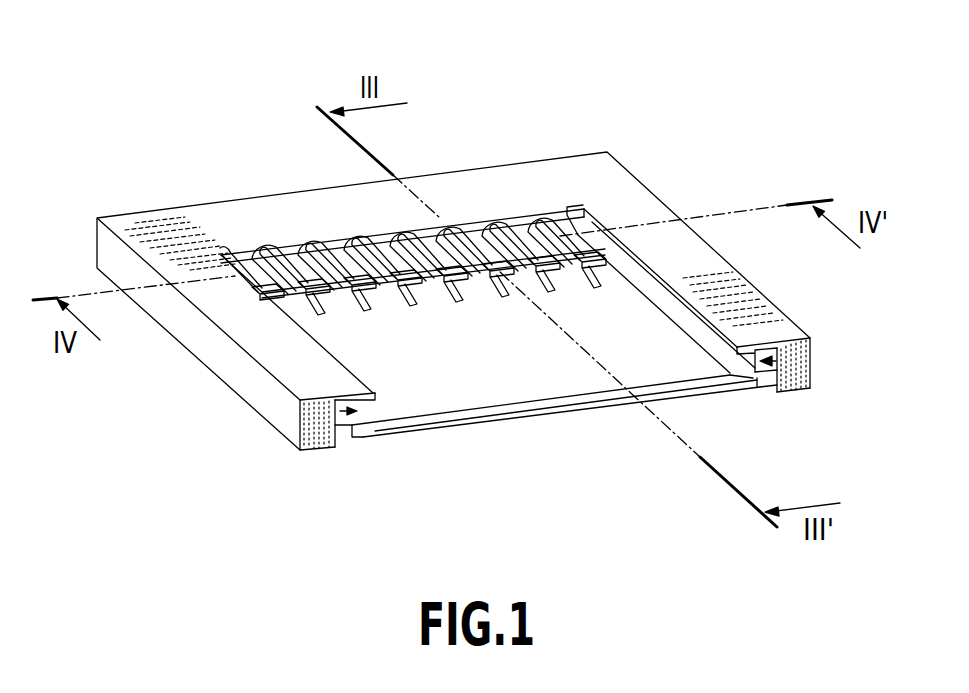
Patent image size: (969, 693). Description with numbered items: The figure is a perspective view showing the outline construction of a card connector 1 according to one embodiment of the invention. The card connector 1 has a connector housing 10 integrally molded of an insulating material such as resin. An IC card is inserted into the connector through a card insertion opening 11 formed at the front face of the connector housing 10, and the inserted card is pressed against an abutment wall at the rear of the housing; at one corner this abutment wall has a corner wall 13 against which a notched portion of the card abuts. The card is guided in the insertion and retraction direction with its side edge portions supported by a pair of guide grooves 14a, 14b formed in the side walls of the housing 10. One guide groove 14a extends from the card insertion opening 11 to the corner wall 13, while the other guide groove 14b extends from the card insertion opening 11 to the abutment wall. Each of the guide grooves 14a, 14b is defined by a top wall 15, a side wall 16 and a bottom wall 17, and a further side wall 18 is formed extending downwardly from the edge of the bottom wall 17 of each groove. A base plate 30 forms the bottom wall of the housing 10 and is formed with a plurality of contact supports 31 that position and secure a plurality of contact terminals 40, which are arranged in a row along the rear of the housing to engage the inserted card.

The card connector 1 is at (605, 110).
The connector housing 10 is at (168, 222).
The card insertion opening 11 is at (518, 387).
The corner wall 13 is at (573, 222).
The guide groove 14a is at (778, 350).
The guide groove 14b is at (327, 423).
The top wall 15 is at (351, 393).
The side wall 16 is at (334, 420).
The bottom wall 17 is at (355, 413).
The side wall 18 is at (363, 437).
The base plate 30 is at (420, 270).
The contact supports 31 is at (337, 237).
The contact terminals 40 is at (530, 227).